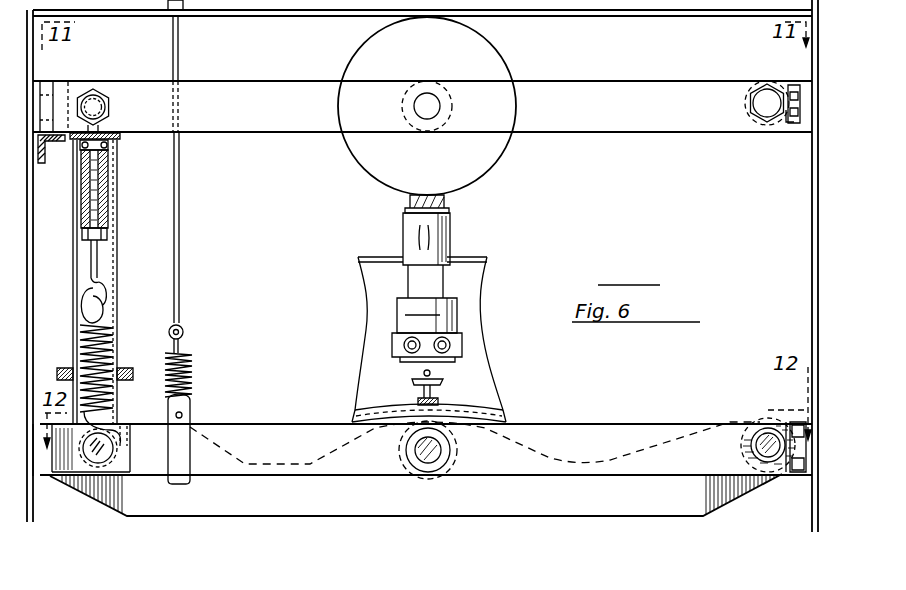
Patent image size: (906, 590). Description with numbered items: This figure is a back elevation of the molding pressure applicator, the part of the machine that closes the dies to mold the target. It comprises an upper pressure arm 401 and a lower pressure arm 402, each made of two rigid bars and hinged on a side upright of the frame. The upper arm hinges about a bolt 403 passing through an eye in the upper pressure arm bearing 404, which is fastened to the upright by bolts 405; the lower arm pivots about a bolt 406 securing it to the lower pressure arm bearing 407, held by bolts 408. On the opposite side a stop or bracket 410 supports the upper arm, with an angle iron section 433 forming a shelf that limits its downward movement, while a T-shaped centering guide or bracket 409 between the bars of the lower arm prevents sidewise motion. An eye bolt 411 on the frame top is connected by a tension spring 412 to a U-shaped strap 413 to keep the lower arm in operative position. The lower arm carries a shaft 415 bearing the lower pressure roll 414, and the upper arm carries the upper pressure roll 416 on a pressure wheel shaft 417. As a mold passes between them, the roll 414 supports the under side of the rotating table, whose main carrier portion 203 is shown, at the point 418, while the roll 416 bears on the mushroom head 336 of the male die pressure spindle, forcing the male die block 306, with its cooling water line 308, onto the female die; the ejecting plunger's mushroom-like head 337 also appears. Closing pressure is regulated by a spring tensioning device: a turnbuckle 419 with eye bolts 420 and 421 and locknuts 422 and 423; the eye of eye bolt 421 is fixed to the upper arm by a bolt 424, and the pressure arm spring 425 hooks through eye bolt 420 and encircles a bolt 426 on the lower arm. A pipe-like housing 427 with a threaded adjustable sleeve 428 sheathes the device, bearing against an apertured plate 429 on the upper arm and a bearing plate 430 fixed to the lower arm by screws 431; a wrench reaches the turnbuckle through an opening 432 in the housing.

The main carrier portion 203 is at (365, 395).
The male die block 306 is at (412, 324).
The cooling water line 308 is at (462, 344).
The mushroom head 336 is at (446, 202).
The mushroom-like head 337 is at (432, 392).
The upper pressure arm 401 is at (624, 82).
The lower pressure arm 402 is at (615, 517).
The bolt 403 is at (766, 100).
The upper pressure arm bearing 404 is at (802, 86).
The bolts 405 is at (790, 120).
The bolt 406 is at (765, 462).
The lower pressure arm bearing 407 is at (795, 422).
The bolts 408 is at (802, 466).
The centering guide or bracket 409 is at (52, 478).
The stop or bracket 410 is at (45, 90).
The eye bolt 411 is at (180, 202).
The tension spring 412 is at (194, 370).
The U-shaped strap 413 is at (184, 470).
The lower pressure roll 414 is at (455, 462).
The shaft 415 is at (425, 455).
The upper pressure roll 416 is at (487, 47).
The pressure wheel shaft 417 is at (432, 104).
The point of support 418 is at (440, 402).
The turnbuckle 419 is at (110, 180).
The eye bolt 420 is at (98, 276).
The eye bolt 421 is at (94, 104).
The locknut 422 is at (108, 232).
The locknut 423 is at (109, 147).
The bolt 424 is at (95, 98).
The pressure arm spring 425 is at (104, 317).
The bolt 426 is at (98, 458).
The housing 427 is at (106, 295).
The adjustable sleeve 428 is at (122, 374).
The apertured plate 429 is at (112, 134).
The bearing plate 430 is at (106, 418).
The screws 431 is at (108, 432).
The opening 432 is at (110, 200).
The angle iron section 433 is at (43, 166).